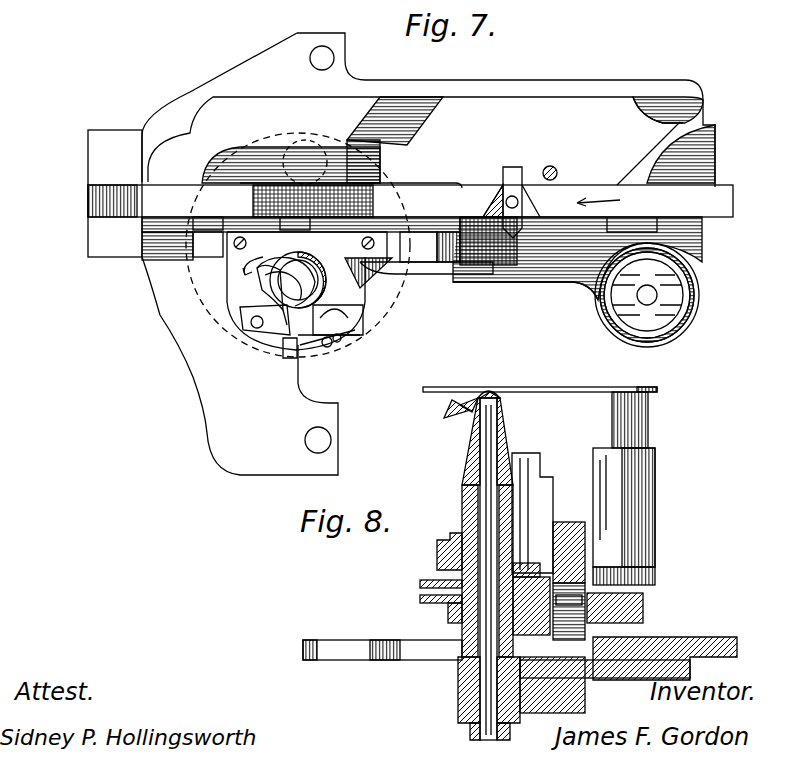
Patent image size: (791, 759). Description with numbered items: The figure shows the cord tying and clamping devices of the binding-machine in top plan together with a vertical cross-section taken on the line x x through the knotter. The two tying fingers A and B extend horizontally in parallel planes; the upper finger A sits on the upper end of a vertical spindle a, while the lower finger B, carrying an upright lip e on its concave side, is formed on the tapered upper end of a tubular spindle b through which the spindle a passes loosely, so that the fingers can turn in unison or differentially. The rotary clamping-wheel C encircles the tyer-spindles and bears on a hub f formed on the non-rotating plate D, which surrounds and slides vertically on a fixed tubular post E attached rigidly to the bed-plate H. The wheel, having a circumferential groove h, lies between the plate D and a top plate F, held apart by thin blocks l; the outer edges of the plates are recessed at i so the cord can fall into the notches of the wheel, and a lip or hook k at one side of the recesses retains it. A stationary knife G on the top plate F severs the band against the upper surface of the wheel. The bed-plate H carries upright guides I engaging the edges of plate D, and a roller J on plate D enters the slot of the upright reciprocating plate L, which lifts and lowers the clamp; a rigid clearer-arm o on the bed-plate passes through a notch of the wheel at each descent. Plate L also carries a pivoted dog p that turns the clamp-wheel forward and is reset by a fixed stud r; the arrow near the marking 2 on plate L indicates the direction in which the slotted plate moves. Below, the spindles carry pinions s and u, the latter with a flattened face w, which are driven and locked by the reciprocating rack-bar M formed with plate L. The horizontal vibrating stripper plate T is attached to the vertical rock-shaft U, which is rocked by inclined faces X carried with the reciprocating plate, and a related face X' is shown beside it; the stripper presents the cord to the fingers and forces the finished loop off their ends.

In FIG. 7, the section line x is at (258, 14).
In FIG. 7, the bed-plate H is at (401, 254).
In FIG. 8, the bed-plate H is at (520, 644).
In FIG. 7, the upper tying finger A is at (298, 245).
In FIG. 8, the upper tying finger A is at (510, 402).
In FIG. 7, the lower tying finger B is at (249, 279).
In FIG. 8, the lower tying finger B is at (451, 418).
In FIG. 7, the rotary clamping-wheel C is at (307, 291).
In FIG. 7, the top plate F is at (406, 262).
In FIG. 7, the upright lip e is at (275, 320).
In FIG. 7, the hub f is at (338, 313).
In FIG. 8, the hub f is at (445, 606).
In FIG. 7, the stationary knife G is at (331, 346).
In FIG. 7, the lip or hook k is at (330, 356).
In FIG. 7, the recess i is at (283, 352).
In FIG. 7, the upright reciprocating plate L is at (410, 207).
In FIG. 8, the upright reciprocating plate L is at (569, 552).
In FIG. 7, the slide 2 is at (617, 215).
In FIG. 7, the intermediate plate or thin block l is at (301, 239).
In FIG. 7, the non-rotating plate D is at (458, 241).
In FIG. 8, the non-rotating plate D is at (531, 606).
In FIG. 7, the clearer-arm o is at (408, 278).
In FIG. 7, the horizontal vibrating plate T is at (617, 317).
In FIG. 8, the horizontal vibrating plate T is at (540, 376).
In FIG. 7, the pivoted dog p is at (513, 191).
In FIG. 7, the fixed stud r is at (556, 168).
In FIG. 7, the inclined faces X is at (394, 120).
In FIG. 8, the inclined faces X is at (628, 606).
In FIG. 7, the hatched block X' is at (648, 153).
In FIG. 8, the tubular spindle b is at (480, 441).
In FIG. 8, the vertical spindle a is at (490, 742).
In FIG. 8, the fixed tubular post E is at (476, 571).
In FIG. 8, the collar c is at (437, 545).
In FIG. 8, the circumferential groove h is at (420, 585).
In FIG. 8, the pinion u is at (480, 690).
In FIG. 8, the pinion s is at (481, 734).
In FIG. 8, the upright guides or ways I is at (536, 513).
In FIG. 8, the plate F' is at (526, 558).
In FIG. 8, the roller J is at (569, 611).
In FIG. 8, the vertical rock-shaft U is at (624, 479).
In FIG. 8, the flattened face w is at (657, 575).
In FIG. 8, the reciprocating rack-bar M is at (560, 693).